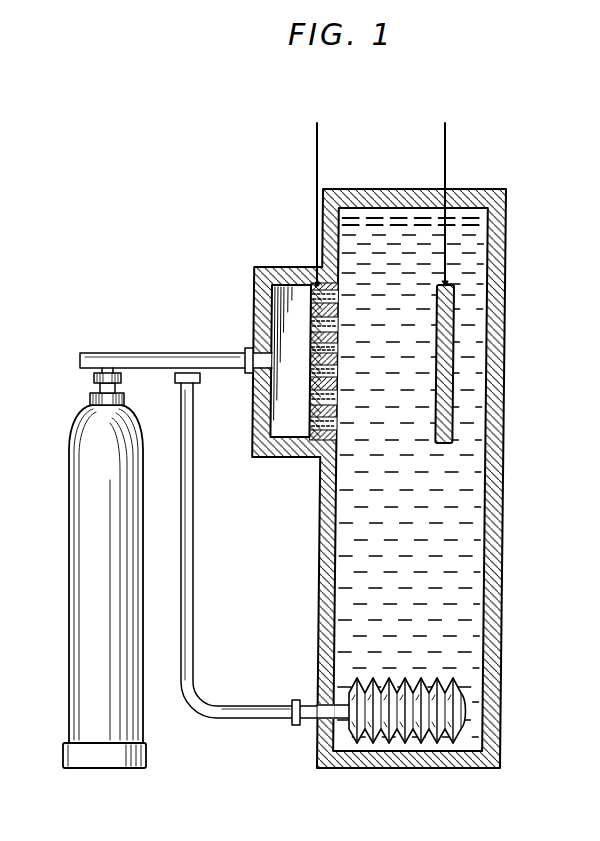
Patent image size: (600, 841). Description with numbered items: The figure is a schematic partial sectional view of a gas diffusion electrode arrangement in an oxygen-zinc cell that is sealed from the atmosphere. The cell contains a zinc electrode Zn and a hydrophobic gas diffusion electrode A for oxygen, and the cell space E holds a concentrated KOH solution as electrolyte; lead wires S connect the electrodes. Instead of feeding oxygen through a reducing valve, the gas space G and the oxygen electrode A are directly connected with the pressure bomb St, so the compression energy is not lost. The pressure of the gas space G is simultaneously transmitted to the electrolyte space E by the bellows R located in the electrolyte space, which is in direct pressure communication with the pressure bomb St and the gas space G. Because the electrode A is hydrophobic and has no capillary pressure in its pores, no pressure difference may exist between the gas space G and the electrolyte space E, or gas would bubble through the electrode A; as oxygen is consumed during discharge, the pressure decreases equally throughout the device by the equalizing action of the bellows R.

The lead wires / electrical connections S is at (317, 143).
The gas space G is at (282, 305).
The hydrophobic gas diffusion electrode A is at (311, 408).
The zinc electrode Zn is at (436, 347).
The cell space E is at (458, 517).
The pressure bomb St is at (80, 552).
The bellows R is at (398, 744).